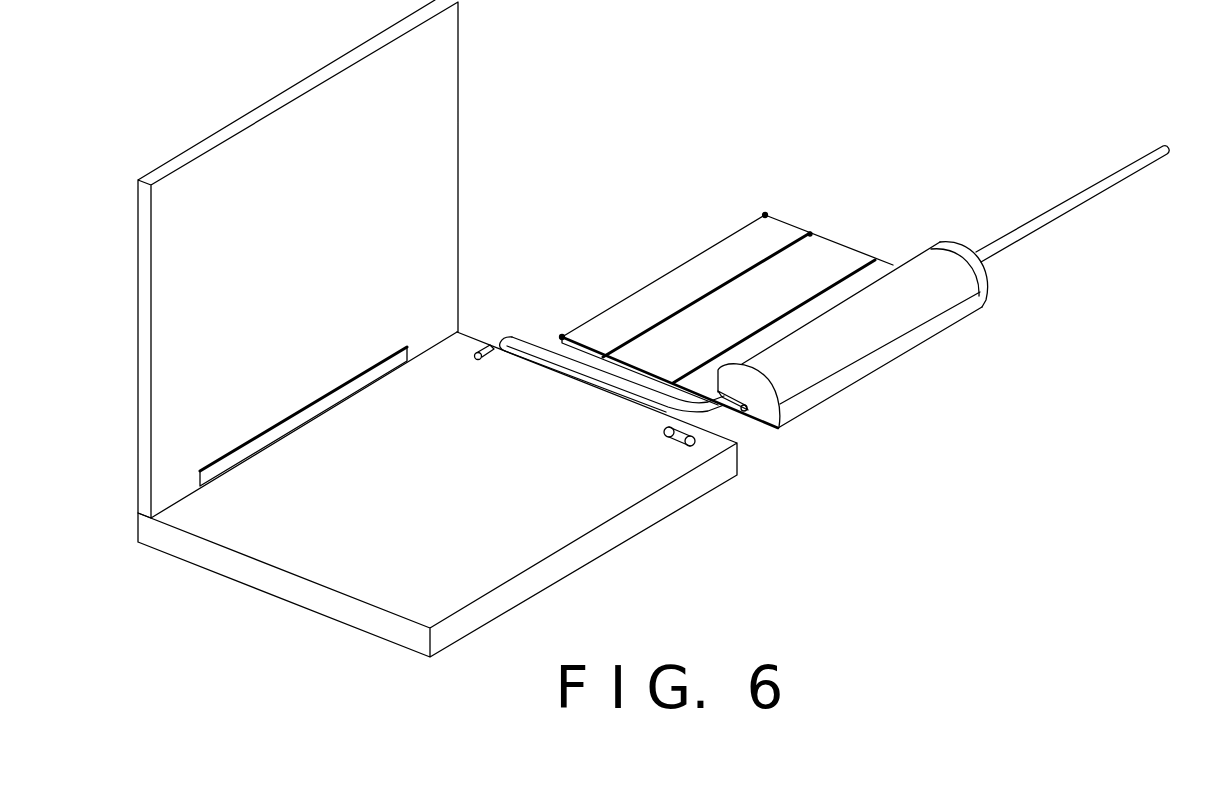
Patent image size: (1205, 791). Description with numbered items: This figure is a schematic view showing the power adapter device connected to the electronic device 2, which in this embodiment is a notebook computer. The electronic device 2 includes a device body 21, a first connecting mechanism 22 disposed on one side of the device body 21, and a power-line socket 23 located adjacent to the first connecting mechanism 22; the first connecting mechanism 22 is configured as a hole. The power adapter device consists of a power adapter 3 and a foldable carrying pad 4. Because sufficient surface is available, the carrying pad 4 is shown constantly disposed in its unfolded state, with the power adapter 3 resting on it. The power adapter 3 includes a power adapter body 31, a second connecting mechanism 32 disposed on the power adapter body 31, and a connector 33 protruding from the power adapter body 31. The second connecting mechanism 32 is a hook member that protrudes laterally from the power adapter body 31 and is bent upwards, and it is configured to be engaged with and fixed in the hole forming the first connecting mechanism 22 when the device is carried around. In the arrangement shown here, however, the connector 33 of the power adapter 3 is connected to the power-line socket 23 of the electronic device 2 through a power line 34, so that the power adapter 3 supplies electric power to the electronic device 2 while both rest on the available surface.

The electronic device 2 is at (437, 328).
The device body 21 is at (607, 497).
The first connecting mechanism 22 is at (668, 447).
The power-line socket 23 is at (477, 351).
The power adapter 3 is at (886, 320).
The power adapter body 31 is at (771, 393).
The second connecting mechanism 32 is at (745, 410).
The connector 33 is at (718, 388).
The power line 34 is at (545, 346).
The carrying pad 4 is at (834, 237).